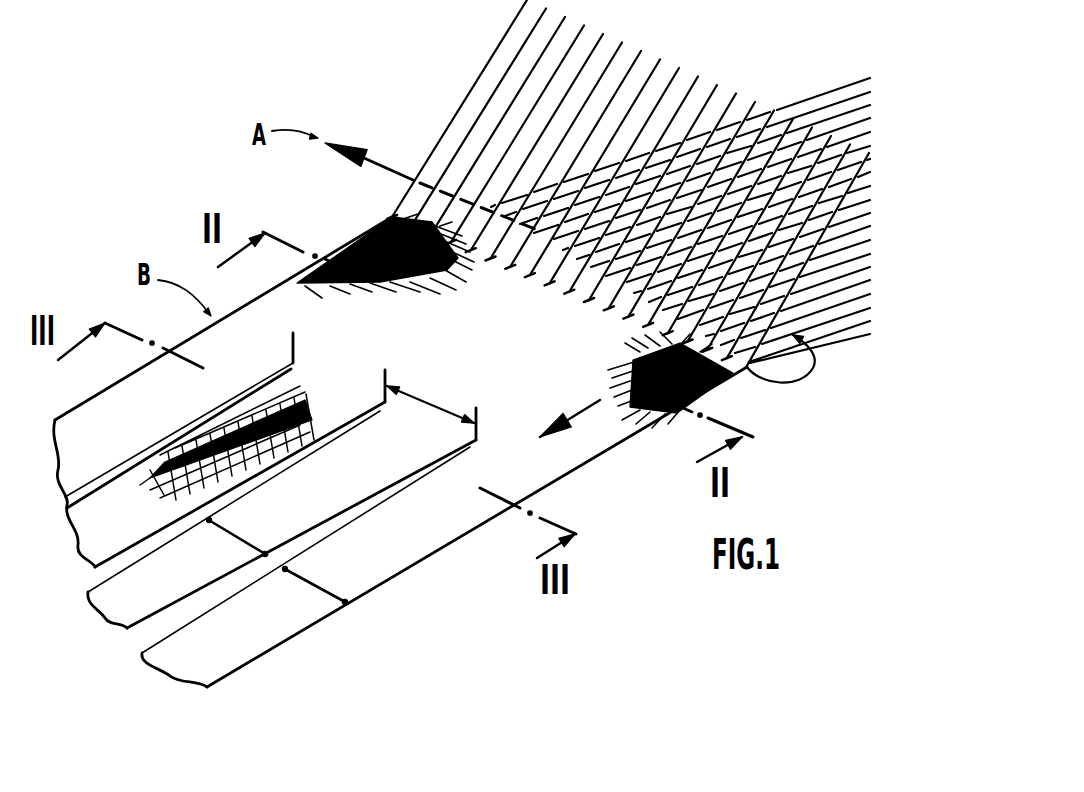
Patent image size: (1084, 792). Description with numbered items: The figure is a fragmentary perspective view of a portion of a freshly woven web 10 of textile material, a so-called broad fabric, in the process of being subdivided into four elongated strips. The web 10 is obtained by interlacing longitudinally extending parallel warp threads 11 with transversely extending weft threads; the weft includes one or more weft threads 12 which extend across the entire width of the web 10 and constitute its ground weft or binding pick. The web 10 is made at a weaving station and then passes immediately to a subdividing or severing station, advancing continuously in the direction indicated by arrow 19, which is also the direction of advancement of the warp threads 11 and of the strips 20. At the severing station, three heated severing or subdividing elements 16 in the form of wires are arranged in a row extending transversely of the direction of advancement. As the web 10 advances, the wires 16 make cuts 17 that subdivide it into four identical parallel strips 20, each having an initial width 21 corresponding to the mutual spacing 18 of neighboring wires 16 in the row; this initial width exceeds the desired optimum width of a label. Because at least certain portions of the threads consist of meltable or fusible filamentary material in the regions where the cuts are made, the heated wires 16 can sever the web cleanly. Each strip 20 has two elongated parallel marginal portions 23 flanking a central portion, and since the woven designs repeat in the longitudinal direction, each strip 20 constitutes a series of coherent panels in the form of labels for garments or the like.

The woven web 10 is at (717, 387).
The warp threads 11 is at (497, 47).
The weft thread 12 is at (396, 174).
The heated severing element 16 is at (382, 383).
The cut 17 is at (333, 430).
The mutual spacing 18 is at (428, 393).
The arrow 19 is at (588, 405).
The strip 20 is at (130, 627).
The initial width 21 is at (250, 500).
The marginal portion 23 is at (160, 529).